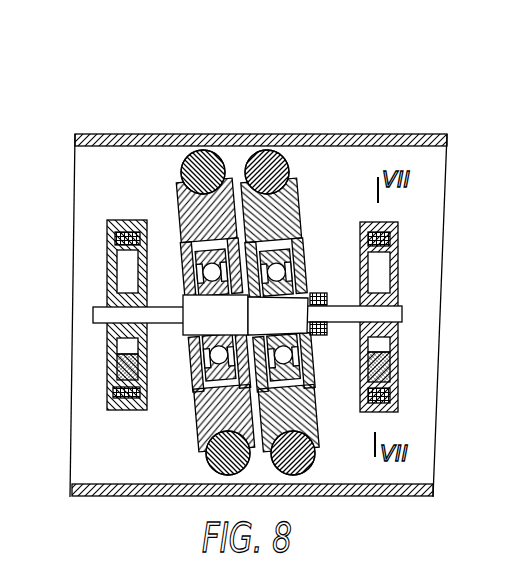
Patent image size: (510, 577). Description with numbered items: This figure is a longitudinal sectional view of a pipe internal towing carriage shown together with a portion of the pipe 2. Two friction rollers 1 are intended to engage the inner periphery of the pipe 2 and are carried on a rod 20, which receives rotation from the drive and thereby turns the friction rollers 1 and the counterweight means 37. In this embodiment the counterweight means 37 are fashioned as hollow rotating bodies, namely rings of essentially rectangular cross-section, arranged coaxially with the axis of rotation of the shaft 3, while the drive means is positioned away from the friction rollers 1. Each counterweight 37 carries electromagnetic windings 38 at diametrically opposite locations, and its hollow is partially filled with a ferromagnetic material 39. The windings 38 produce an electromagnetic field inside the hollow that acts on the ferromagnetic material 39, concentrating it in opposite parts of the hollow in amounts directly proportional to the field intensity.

The friction rollers 1 is at (284, 164).
The pipe 2 is at (328, 492).
The shaft 3 is at (197, 329).
The rod 20 is at (100, 309).
The counterweight means 37 is at (107, 354).
The electromagnetic windings 38 is at (128, 232).
The ferromagnetic material 39 is at (128, 398).